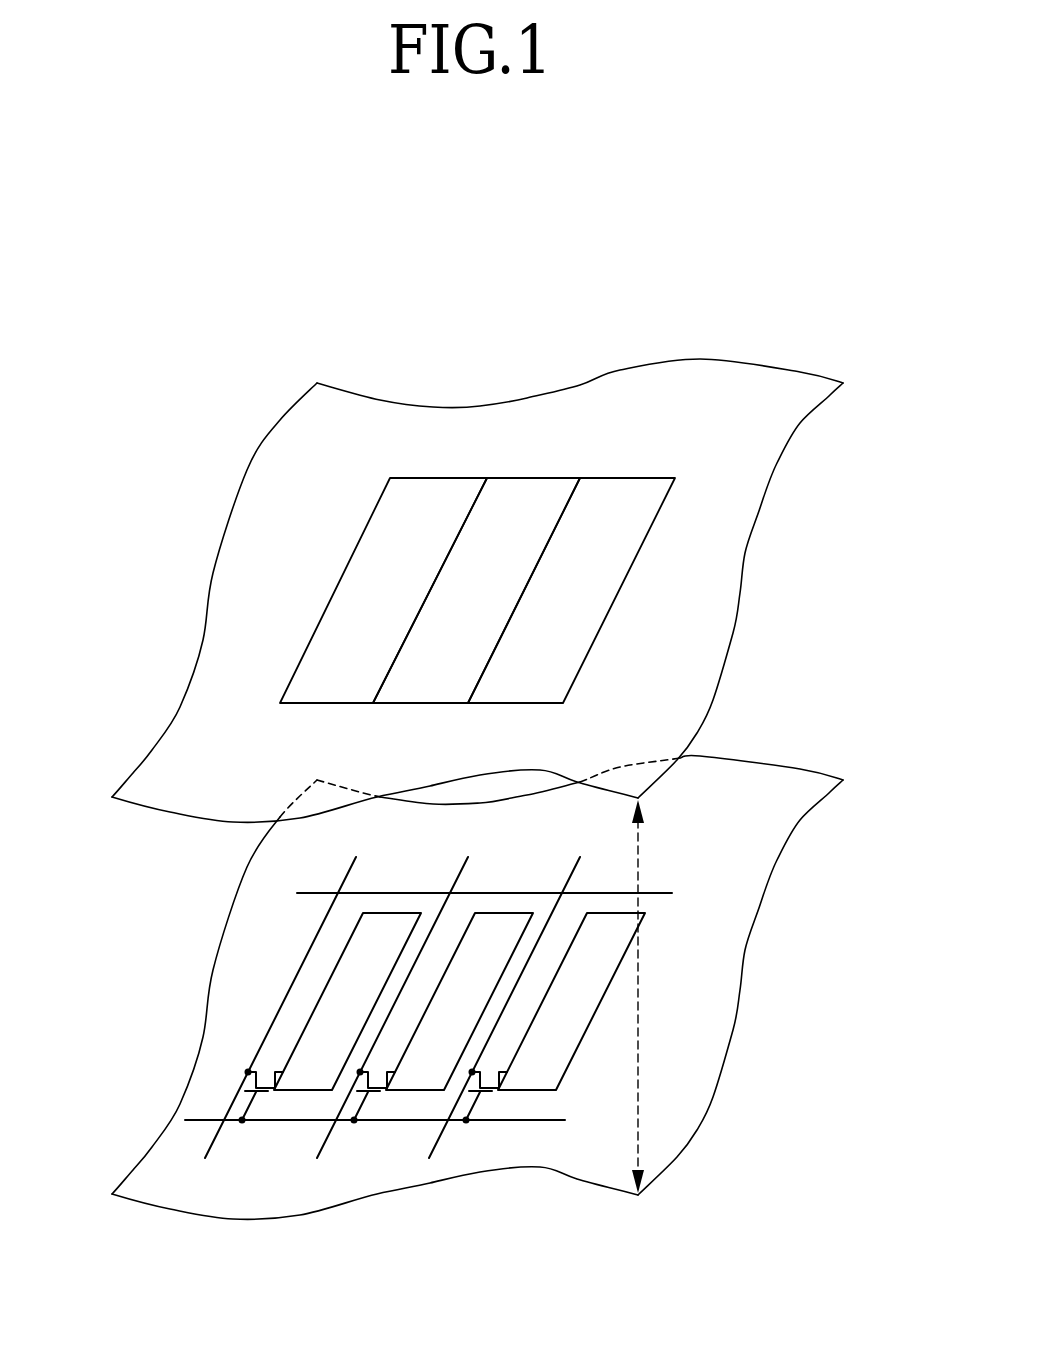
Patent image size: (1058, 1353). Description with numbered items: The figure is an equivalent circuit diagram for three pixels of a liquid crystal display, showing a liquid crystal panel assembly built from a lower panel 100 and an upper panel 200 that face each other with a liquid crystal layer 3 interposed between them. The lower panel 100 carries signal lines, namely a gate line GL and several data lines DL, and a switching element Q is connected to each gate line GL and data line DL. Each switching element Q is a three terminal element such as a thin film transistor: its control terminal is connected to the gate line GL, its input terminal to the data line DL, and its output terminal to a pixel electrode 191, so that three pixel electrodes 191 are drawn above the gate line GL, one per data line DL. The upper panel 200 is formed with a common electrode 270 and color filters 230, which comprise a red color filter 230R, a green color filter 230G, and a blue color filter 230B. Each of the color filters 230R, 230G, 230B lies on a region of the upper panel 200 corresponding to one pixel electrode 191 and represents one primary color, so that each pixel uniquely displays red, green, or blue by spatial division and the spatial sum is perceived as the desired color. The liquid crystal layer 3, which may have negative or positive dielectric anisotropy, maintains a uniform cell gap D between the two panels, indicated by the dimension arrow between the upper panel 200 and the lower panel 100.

The liquid crystal layer 3 is at (163, 943).
The lower panel 100 is at (772, 942).
The pixel electrode 191 is at (300, 1093).
The upper panel 200 is at (767, 605).
The color filters 230 is at (477, 458).
The red color filter 230R is at (438, 478).
The green color filter 230G is at (532, 477).
The blue color filter 230B is at (571, 490).
The common electrode 270 is at (760, 508).
The data line DL is at (408, 987).
The gate line GL is at (398, 1121).
The switching element Q is at (375, 1098).
The cell gap D is at (645, 1070).